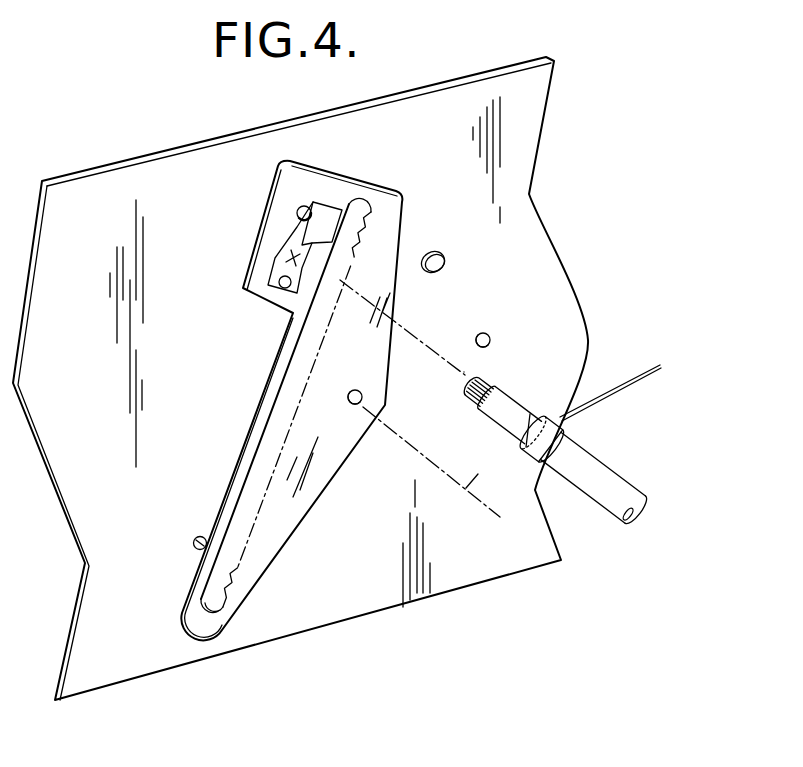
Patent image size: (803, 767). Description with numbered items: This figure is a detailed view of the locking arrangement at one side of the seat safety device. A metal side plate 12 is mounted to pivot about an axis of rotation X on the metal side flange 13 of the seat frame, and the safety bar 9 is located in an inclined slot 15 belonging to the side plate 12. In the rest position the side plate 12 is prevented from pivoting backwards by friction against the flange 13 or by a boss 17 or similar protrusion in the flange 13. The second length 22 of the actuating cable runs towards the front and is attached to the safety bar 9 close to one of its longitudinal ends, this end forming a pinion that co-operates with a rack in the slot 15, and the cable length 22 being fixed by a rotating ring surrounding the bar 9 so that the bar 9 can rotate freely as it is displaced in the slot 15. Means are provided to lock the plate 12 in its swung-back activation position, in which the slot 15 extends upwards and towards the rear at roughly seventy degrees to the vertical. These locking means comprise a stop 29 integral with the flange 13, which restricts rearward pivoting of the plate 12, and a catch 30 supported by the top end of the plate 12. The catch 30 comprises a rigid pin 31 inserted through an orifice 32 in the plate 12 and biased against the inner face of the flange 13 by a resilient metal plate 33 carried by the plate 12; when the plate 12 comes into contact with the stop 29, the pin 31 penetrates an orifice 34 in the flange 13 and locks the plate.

The safety bar 9 is at (511, 404).
The side plate 12 is at (286, 522).
The side flange 13 is at (307, 613).
The slot 15 is at (255, 477).
The boss 17 is at (194, 548).
The second length of the cable 22 is at (617, 393).
The stop 29 is at (488, 333).
The catch 30 is at (274, 207).
The rigid pin 31 is at (296, 223).
The orifice 32 is at (297, 210).
The resilient metal plate 33 is at (308, 252).
The orifice 34 is at (443, 257).